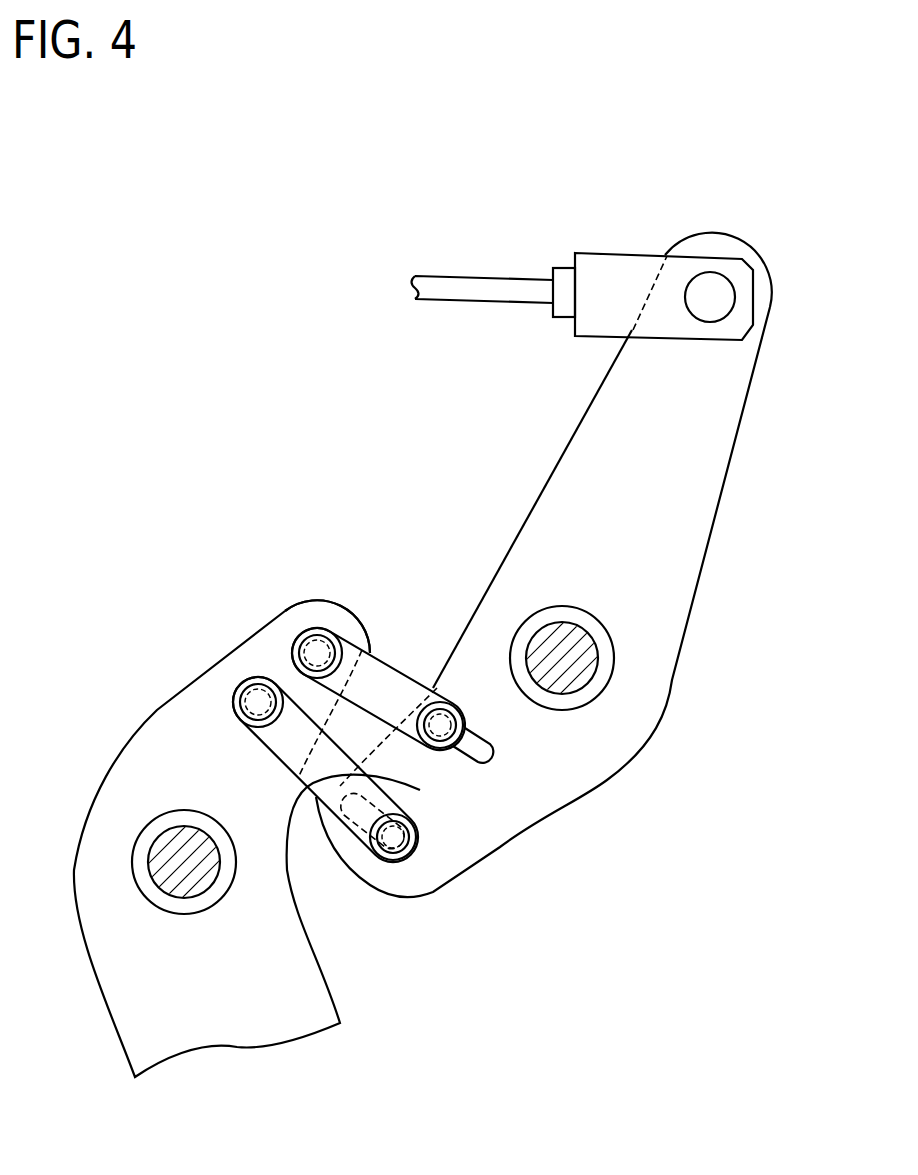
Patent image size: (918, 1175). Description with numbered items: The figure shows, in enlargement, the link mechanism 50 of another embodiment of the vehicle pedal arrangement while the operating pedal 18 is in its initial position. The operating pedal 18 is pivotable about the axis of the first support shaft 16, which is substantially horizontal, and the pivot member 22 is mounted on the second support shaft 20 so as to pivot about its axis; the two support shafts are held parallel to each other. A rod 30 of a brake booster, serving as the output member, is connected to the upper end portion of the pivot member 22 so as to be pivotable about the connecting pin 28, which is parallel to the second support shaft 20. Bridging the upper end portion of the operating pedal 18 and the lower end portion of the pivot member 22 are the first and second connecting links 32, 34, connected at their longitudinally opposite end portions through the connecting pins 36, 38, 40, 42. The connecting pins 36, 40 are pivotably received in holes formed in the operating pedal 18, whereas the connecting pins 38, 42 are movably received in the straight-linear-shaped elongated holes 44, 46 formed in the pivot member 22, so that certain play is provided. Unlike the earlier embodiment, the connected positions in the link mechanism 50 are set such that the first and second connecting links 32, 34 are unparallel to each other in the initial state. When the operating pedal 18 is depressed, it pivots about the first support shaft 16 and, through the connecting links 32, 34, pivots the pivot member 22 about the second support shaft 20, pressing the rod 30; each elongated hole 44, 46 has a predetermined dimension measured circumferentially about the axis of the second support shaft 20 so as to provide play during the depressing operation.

The first support shaft 16 is at (170, 850).
The operating pedal 18 is at (248, 1032).
The second support shaft 20 is at (583, 675).
The pivot member 22 is at (667, 632).
The connecting pin 28 is at (711, 293).
The rod 30 is at (466, 283).
The first connecting link 32 is at (277, 743).
The second connecting link 34 is at (377, 675).
The connecting pin 36 is at (253, 700).
The connecting pin 38 is at (397, 850).
The connecting pin 40 is at (310, 648).
The connecting pin 42 is at (443, 713).
The elongated hole 44 is at (358, 830).
The elongated hole 46 is at (497, 748).
The link mechanism 50 is at (344, 590).